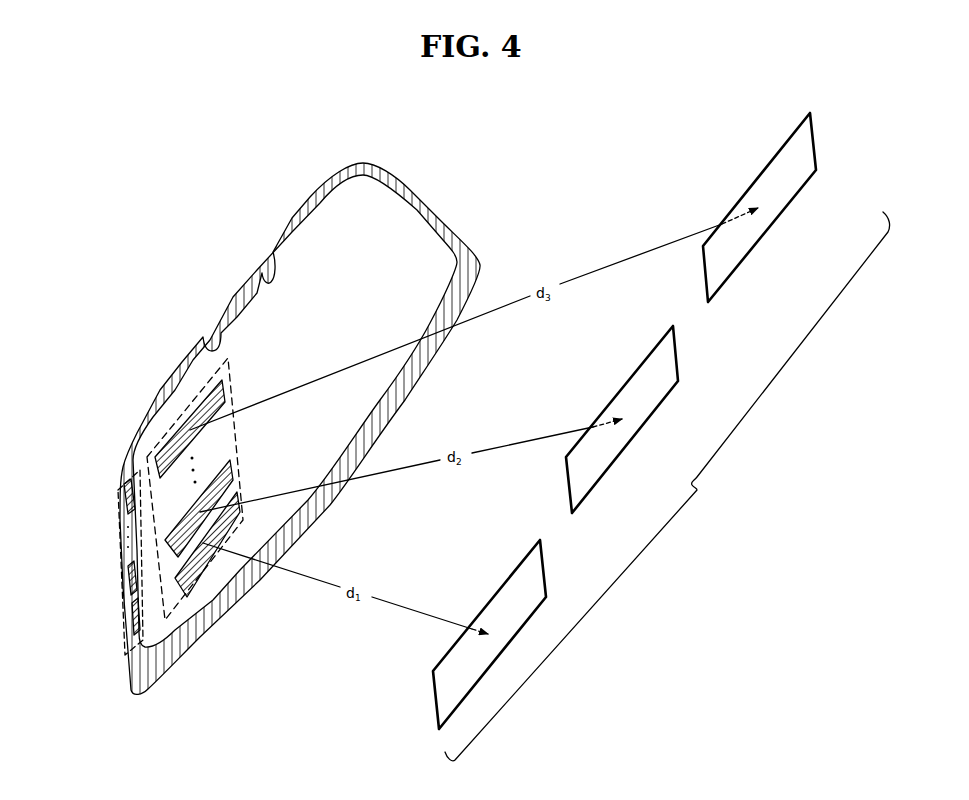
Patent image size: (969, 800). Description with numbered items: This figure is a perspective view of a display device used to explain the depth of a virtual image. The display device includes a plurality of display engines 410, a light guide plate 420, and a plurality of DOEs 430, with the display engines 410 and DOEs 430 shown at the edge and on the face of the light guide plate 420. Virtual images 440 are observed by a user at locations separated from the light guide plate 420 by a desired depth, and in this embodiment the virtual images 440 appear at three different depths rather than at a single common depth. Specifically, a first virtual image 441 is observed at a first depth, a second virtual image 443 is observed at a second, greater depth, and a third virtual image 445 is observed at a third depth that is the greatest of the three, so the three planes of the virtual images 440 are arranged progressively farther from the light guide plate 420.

The display engines 410 is at (117, 522).
The light guide plate 420 is at (400, 220).
The diffractive optical elements (DOEs) 430 is at (188, 412).
The virtual images 440 is at (667, 486).
The first virtual image 441 is at (490, 602).
The second virtual image 443 is at (617, 393).
The third virtual image 445 is at (750, 183).